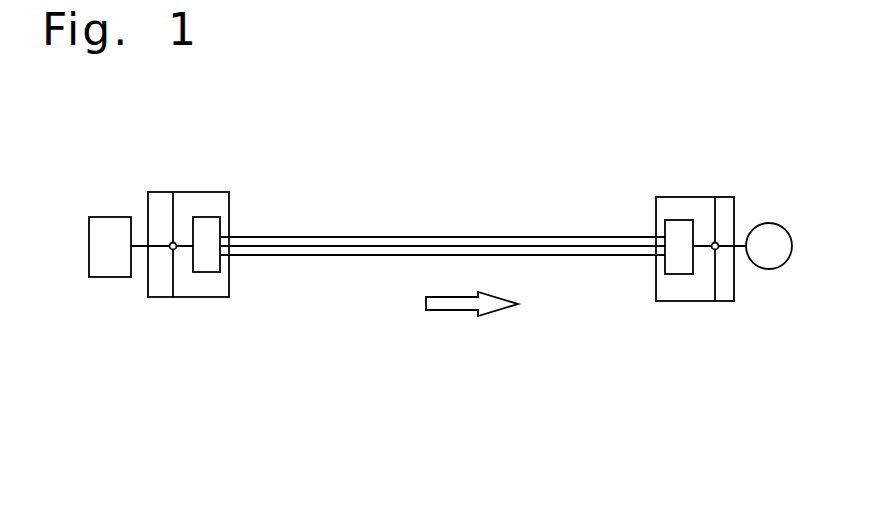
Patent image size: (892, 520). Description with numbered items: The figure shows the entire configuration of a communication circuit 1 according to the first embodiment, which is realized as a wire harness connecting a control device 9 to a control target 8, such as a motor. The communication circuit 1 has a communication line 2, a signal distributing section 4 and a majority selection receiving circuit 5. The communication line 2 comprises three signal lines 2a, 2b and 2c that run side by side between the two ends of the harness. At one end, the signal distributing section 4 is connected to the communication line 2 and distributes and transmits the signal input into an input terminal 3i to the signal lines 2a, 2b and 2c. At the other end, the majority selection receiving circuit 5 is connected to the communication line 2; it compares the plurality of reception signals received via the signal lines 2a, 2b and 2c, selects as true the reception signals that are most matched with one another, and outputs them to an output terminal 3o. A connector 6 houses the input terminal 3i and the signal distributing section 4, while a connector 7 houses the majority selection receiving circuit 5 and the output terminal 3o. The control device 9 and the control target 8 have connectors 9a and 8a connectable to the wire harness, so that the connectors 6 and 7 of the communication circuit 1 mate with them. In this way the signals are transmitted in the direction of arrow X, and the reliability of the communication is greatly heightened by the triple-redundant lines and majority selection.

The communication circuit 1 is at (259, 377).
The communication line 2 is at (442, 213).
The signal line 2a is at (507, 237).
The signal line 2b is at (517, 246).
The signal line 2c is at (527, 255).
The input terminal 3i is at (175, 249).
The output terminal 3o is at (718, 249).
The signal distributing section 4 is at (207, 217).
The majority selection receiving circuit 5 is at (675, 220).
The connector 6 is at (215, 297).
The connector 7 is at (666, 301).
The control target 8 is at (775, 268).
The connector 8a is at (724, 197).
The control device 9 is at (110, 277).
The connector 9a is at (160, 192).
The arrow X is at (446, 310).